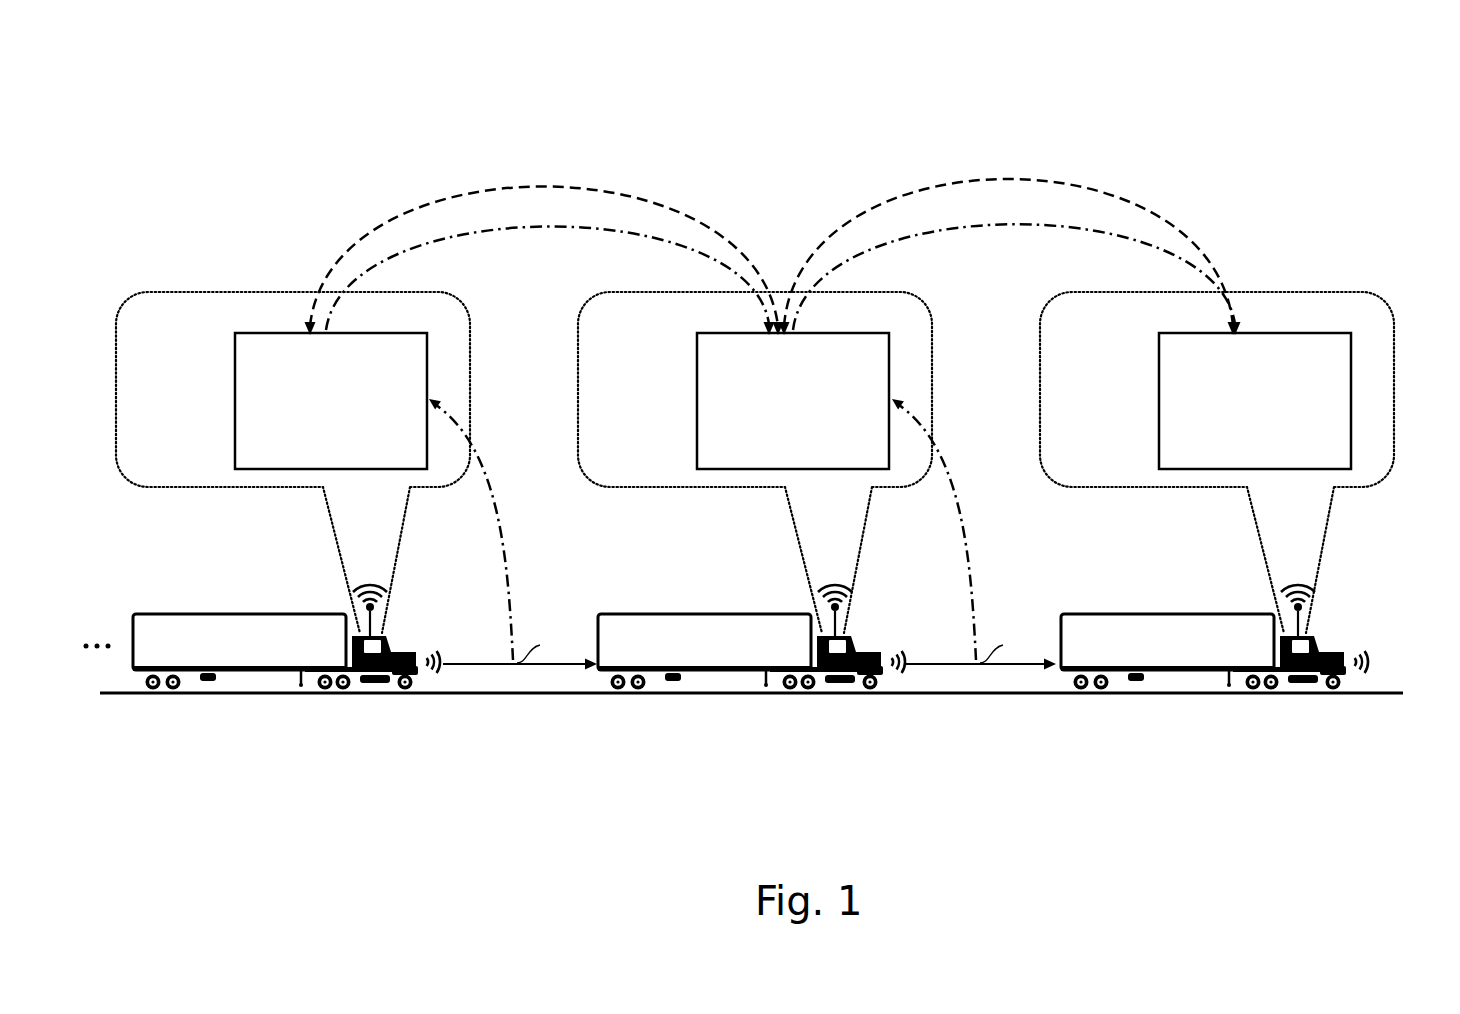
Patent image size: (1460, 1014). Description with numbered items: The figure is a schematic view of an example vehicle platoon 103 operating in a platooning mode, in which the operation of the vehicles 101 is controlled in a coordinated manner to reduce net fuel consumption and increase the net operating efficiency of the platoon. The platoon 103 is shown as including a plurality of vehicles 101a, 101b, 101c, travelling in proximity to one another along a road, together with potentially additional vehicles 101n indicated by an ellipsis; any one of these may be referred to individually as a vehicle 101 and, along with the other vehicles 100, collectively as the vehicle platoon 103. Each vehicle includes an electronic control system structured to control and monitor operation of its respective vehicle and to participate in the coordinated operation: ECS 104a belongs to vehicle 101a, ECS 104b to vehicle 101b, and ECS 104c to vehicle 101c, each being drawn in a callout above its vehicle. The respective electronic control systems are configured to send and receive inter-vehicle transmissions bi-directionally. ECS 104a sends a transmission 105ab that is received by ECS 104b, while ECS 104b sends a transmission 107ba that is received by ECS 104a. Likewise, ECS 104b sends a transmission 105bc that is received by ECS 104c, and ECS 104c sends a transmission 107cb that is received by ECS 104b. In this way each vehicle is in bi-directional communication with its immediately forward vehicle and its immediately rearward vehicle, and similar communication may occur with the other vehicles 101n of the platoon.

The vehicles 100 is at (1263, 98).
The vehicle 101 is at (1411, 609).
The vehicle 101a is at (1328, 645).
The vehicle 101b is at (867, 648).
The vehicle 101c is at (402, 648).
The additional vehicles 101n is at (97, 640).
The vehicle platoon 103 is at (1263, 770).
The electronic control system 104a is at (1159, 400).
The electronic control system 104b is at (697, 400).
The electronic control system 104c is at (235, 400).
The transmission 105ab is at (873, 215).
The transmission 105bc is at (423, 214).
The transmission 107ba is at (1123, 242).
The transmission 107cb is at (657, 242).